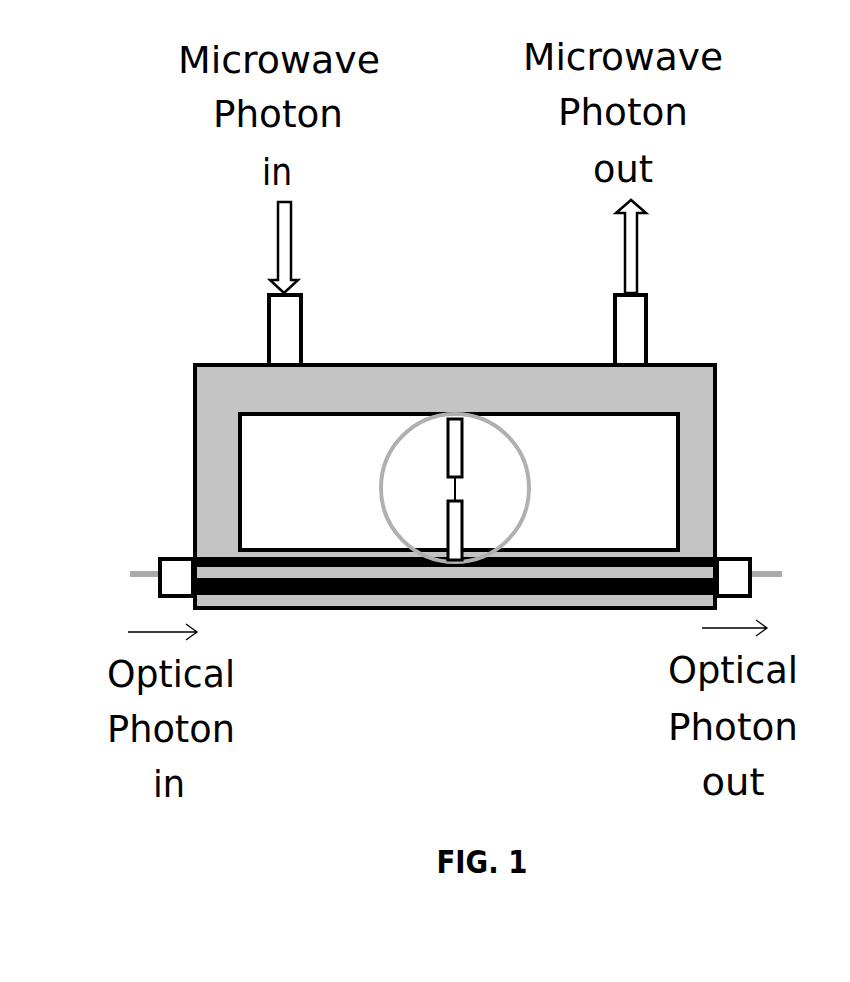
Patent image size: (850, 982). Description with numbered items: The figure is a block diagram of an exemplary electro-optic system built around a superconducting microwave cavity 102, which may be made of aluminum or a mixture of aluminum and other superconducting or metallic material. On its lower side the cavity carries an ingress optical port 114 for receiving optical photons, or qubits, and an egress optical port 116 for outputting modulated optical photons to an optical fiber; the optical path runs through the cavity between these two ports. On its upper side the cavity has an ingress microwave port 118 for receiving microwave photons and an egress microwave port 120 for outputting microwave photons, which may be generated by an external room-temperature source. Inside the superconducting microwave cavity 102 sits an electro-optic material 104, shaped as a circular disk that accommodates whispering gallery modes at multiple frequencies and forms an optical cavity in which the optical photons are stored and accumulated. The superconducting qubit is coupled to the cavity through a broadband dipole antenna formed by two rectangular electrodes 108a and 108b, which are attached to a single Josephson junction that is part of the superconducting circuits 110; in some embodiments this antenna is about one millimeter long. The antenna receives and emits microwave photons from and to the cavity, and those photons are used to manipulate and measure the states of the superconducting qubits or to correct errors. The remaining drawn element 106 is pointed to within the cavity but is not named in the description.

The superconducting microwave cavity 102 is at (717, 363).
The EO material optical cavity 104 is at (507, 463).
The substrate 106 is at (515, 531).
The rectangular electrode 108a is at (447, 438).
The rectangular electrode 108b is at (447, 531).
The superconducting circuits 110 is at (455, 489).
The ingress optical port 114 is at (158, 580).
The egress optical port 116 is at (752, 557).
The ingress microwave port 118 is at (267, 330).
The egress microwave port 120 is at (613, 330).